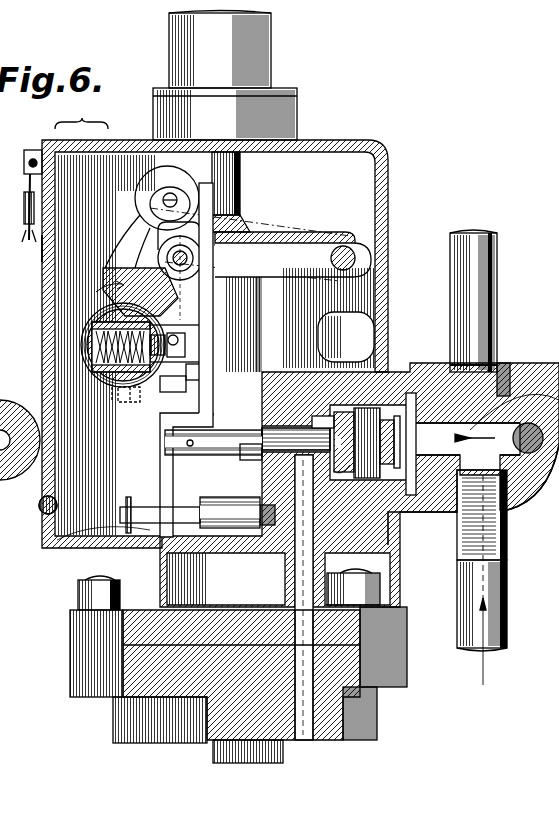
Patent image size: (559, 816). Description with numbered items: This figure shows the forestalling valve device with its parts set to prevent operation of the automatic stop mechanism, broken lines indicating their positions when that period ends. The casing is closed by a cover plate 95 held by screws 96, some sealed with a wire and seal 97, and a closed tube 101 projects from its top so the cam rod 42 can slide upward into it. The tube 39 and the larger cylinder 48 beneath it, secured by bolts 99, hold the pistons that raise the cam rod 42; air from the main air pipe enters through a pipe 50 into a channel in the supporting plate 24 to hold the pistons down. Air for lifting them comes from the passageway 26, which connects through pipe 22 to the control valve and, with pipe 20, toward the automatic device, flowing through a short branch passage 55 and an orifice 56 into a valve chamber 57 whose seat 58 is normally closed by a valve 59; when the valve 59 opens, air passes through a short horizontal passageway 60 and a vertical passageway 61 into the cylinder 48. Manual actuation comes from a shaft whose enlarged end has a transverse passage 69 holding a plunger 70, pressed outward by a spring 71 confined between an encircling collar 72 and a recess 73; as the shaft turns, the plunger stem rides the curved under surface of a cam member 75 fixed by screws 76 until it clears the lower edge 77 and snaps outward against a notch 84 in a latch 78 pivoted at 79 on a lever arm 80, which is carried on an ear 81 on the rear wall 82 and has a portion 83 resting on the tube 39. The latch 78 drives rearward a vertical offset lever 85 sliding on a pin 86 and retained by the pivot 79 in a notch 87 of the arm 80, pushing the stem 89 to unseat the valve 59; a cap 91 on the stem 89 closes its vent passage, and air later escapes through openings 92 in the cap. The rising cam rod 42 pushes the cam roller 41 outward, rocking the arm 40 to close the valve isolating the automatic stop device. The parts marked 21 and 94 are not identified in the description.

The closed tube 101 is at (225, 76).
The rear wall 82 is at (388, 183).
The control unit 21 is at (81, 115).
The screws 76 is at (24, 156).
The wire and seal 97 is at (25, 193).
The cover plate 95 is at (48, 250).
The cam member 75 is at (103, 280).
The encircling collar 72 is at (150, 330).
The spring 71 is at (82, 340).
The transverse passage 69 is at (100, 378).
The plunger 70 is at (116, 388).
The recess 73 is at (137, 403).
The lower edge 77 is at (180, 338).
The notch 84 is at (186, 345).
The latch 78 is at (200, 378).
The bracket 94 is at (186, 395).
The cam roller 41 is at (152, 217).
The arm 40 is at (166, 210).
The notch 87 is at (164, 232).
The pivot 79 is at (173, 258).
The cam rod 42 is at (242, 180).
The vertical offset lever 85 is at (213, 395).
The cap 91 is at (236, 436).
The lever arm 80 is at (283, 233).
The portion of lever arm 83 is at (270, 258).
The ear 81 is at (346, 232).
The tube 39 is at (305, 308).
The pipe 50 is at (497, 287).
The supporting plate 24 is at (512, 375).
The short branch passage 55 is at (490, 428).
The orifice 56 is at (412, 443).
The passageway 26 is at (534, 462).
The pipe 22 is at (507, 545).
The pipe 20 is at (507, 588).
The screws 96 is at (48, 515).
The valve chamber 57 is at (394, 513).
The short horizontal passageway 60 is at (300, 444).
The valve seat 58 is at (340, 442).
The valve 59 is at (384, 444).
The openings 92 is at (170, 450).
The stem 89 is at (243, 460).
The pin 86 is at (118, 510).
The vertical passageway 61 is at (290, 579).
The bolts 99 is at (229, 589).
The cylinder 48 is at (377, 720).